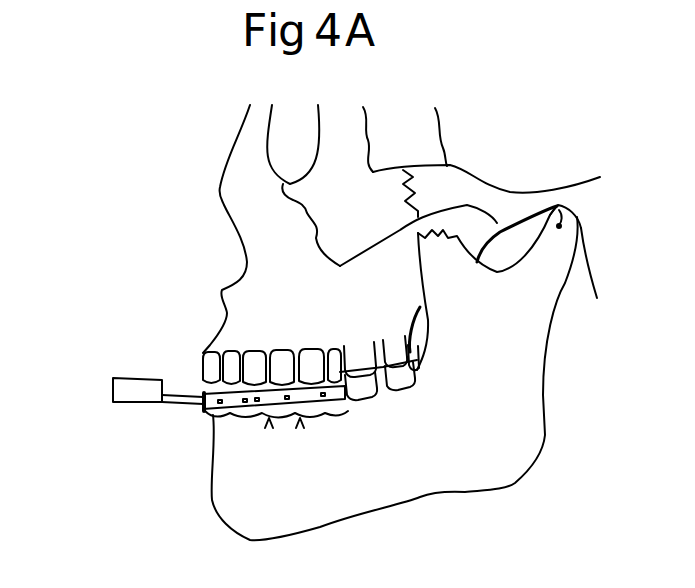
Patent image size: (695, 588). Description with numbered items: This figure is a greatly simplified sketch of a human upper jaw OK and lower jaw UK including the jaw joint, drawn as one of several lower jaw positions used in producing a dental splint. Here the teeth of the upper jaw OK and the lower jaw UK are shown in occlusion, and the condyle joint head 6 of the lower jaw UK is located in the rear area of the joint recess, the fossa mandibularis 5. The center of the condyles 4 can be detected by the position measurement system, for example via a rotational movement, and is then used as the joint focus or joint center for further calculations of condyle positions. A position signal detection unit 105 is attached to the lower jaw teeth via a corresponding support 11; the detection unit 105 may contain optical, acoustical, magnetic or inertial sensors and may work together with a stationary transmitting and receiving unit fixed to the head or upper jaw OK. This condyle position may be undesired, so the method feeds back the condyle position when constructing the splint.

The center of the condyles 4 is at (558, 205).
The joint recess (fossa mandibularis) 5 is at (590, 235).
The condyle joint head 6 is at (558, 205).
The support 11 is at (212, 413).
The position signal detection unit 105 is at (112, 415).
The upper jaw OK is at (213, 340).
The lower jaw UK is at (320, 527).